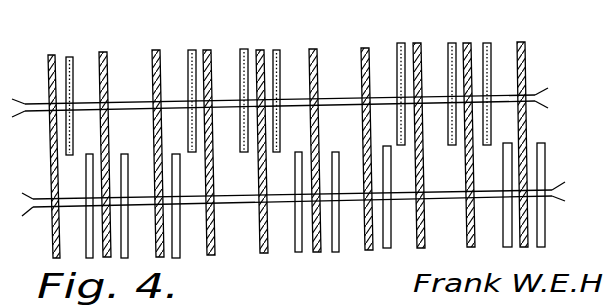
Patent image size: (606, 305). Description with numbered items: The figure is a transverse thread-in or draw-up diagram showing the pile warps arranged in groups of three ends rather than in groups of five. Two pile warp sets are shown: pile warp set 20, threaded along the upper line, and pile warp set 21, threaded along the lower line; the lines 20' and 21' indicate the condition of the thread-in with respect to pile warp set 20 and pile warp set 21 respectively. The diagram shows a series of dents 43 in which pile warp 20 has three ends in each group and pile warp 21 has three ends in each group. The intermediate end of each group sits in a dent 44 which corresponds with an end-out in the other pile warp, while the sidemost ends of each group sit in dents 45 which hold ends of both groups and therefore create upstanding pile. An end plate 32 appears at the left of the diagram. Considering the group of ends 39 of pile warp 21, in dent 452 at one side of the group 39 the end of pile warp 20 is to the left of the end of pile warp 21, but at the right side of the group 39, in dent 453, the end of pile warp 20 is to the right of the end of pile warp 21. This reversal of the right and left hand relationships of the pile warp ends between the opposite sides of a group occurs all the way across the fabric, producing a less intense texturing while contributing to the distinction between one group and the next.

The pile warp set 20 is at (273, 101).
The thread-in condition line 20' is at (557, 89).
The pile warp set 21 is at (287, 233).
The thread-in condition line 21' is at (571, 183).
The end plate 32 is at (50, 57).
The group of ends 39 is at (335, 252).
The dents 43 is at (85, 62).
The dent 44 is at (345, 50).
The dents 45 is at (197, 53).
The dent 452 is at (271, 53).
The dent 453 is at (383, 48).